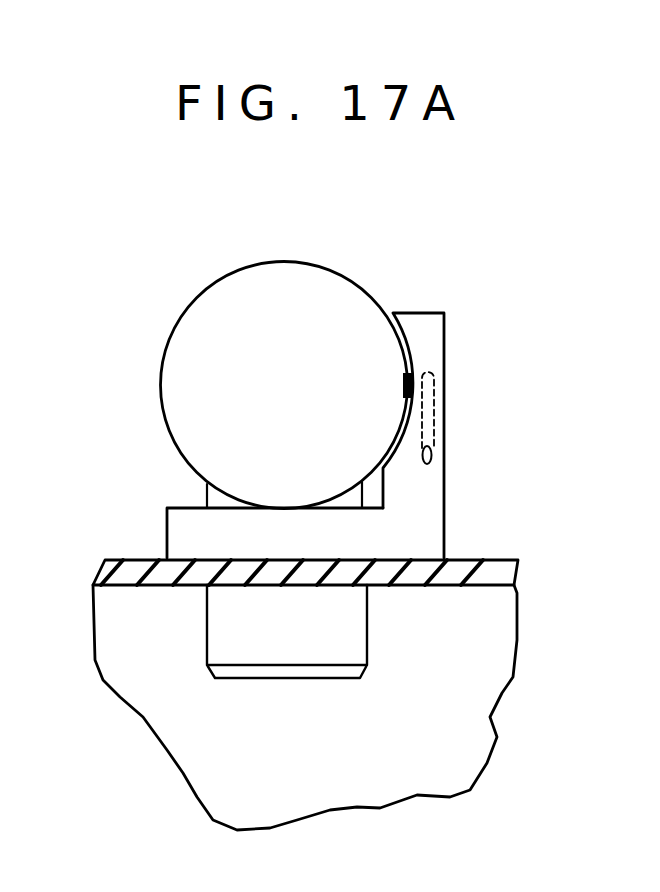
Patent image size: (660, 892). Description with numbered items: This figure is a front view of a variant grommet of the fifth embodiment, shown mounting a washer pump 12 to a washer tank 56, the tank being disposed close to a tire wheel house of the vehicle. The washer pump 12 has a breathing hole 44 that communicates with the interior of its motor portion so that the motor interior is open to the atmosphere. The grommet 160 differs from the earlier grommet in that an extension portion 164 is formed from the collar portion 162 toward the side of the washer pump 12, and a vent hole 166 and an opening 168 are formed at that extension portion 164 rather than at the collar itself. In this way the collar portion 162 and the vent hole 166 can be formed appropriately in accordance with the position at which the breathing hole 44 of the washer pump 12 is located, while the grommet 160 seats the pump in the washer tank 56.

The washer pump 12 is at (183, 304).
The breathing hole 44 is at (404, 376).
The washer tank 56 is at (487, 560).
The grommet 160 is at (368, 446).
The collar portion 162 is at (337, 538).
The extension portion 164 is at (444, 340).
The vent hole 166 is at (436, 422).
The opening 168 is at (431, 457).